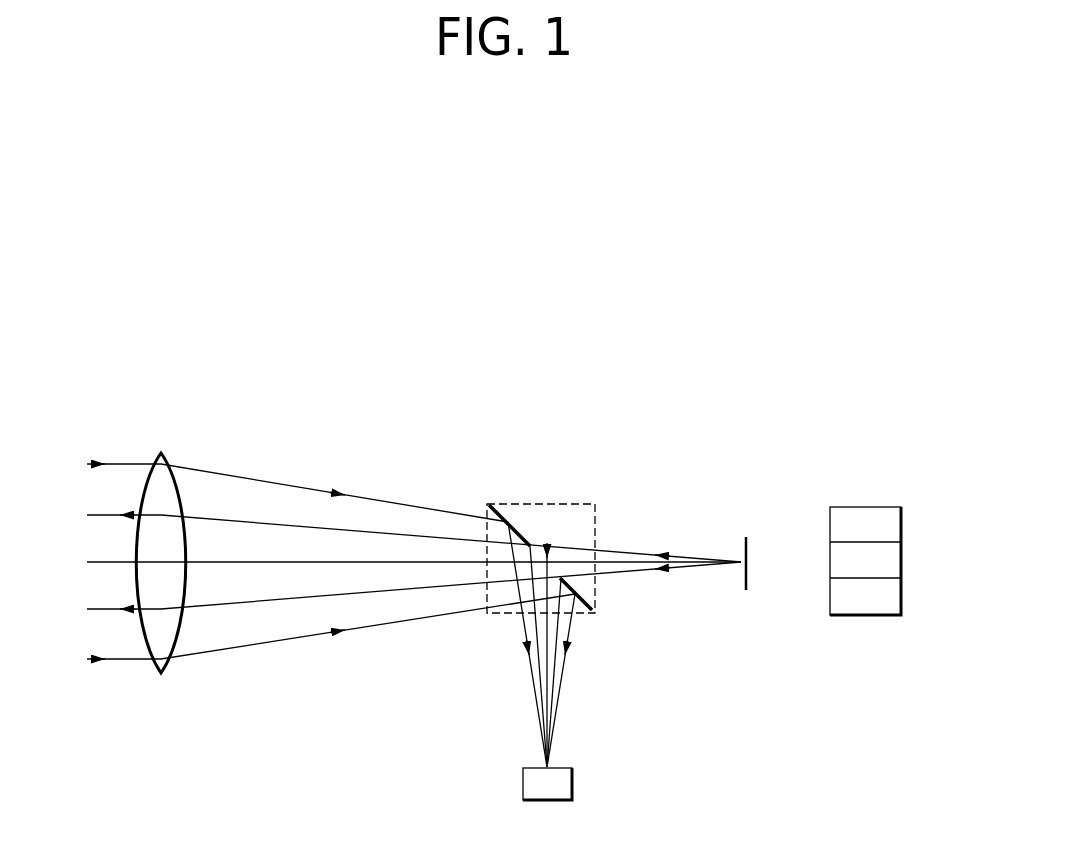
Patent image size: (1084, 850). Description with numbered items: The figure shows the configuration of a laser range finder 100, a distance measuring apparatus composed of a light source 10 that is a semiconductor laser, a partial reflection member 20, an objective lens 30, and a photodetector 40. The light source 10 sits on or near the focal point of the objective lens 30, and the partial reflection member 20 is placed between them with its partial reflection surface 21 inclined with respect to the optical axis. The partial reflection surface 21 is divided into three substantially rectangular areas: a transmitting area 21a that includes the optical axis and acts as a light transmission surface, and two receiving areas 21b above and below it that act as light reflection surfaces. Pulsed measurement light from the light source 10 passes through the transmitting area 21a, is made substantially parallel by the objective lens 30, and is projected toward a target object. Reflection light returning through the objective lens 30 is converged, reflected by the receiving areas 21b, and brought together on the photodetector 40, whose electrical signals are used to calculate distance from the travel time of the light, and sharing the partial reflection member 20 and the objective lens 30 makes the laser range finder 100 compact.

The laser range finder 100 is at (457, 355).
The light source 10 is at (745, 546).
The partial reflection member 20 is at (487, 511).
The partial reflection surface 21 is at (668, 418).
The transmitting area 21a is at (548, 540).
The receiving areas 21b is at (504, 517).
The objective lens 30 is at (161, 453).
The photodetector 40 is at (572, 783).